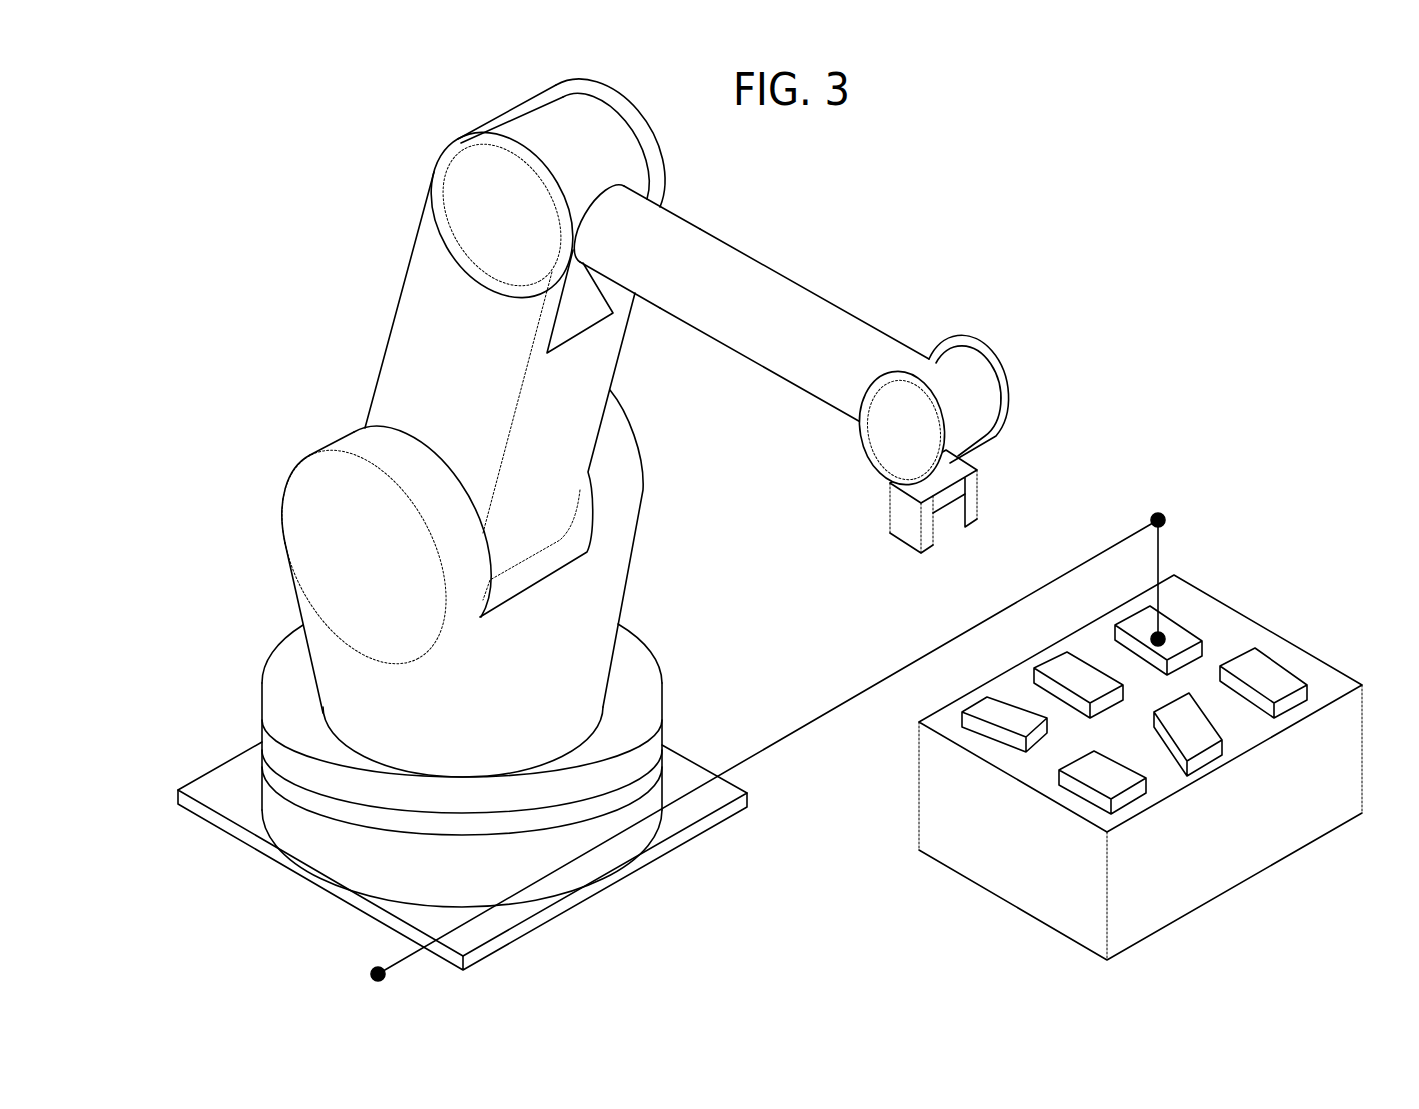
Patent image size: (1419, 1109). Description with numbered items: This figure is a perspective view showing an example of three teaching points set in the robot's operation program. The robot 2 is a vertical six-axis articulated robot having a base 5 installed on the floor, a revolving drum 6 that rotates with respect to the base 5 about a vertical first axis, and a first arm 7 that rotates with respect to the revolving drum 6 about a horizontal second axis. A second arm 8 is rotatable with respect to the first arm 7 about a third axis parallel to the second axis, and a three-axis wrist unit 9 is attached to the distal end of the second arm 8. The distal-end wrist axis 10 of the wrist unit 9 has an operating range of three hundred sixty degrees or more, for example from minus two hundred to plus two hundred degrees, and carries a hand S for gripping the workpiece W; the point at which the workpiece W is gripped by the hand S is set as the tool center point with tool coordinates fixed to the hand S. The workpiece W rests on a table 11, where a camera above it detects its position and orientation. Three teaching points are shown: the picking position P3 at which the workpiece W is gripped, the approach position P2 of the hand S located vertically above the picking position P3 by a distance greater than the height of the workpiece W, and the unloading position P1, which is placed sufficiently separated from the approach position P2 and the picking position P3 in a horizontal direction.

The robot 2 is at (352, 170).
The base 5 is at (240, 795).
The revolving drum 6 is at (601, 593).
The first arm 7 is at (417, 362).
The second arm 8 is at (638, 203).
The wrist unit 9 is at (838, 288).
The distal-end wrist axis 10 is at (976, 482).
The hand S is at (905, 528).
The table 11 is at (1016, 861).
The workpiece W is at (1272, 675).
The unloading position P1 is at (746, 755).
The approach position P2 is at (1159, 559).
The picking position P3 is at (1176, 625).